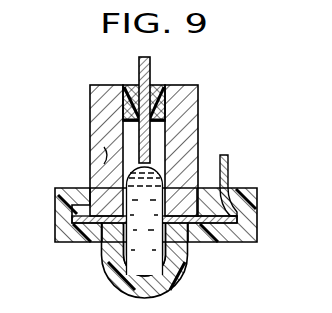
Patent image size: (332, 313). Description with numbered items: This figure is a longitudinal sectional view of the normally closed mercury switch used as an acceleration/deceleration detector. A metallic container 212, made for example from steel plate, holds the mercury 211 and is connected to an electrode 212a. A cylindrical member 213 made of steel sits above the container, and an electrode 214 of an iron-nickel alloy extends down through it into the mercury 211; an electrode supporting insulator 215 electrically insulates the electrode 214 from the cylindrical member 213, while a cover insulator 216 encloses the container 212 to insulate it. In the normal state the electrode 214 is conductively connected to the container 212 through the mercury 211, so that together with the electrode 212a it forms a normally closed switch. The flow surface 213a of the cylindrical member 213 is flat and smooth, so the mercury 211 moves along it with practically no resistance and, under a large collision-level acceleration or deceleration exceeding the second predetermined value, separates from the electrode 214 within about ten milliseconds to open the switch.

The mercury 211 is at (123, 252).
The metallic container 212 is at (178, 263).
The electrode 212a is at (228, 170).
The cylindrical member 213 is at (198, 128).
The flow surface 213a is at (104, 156).
The electrode 214 is at (150, 72).
The electrode supporting insulator 215 is at (165, 86).
The cover insulator 216 is at (257, 218).